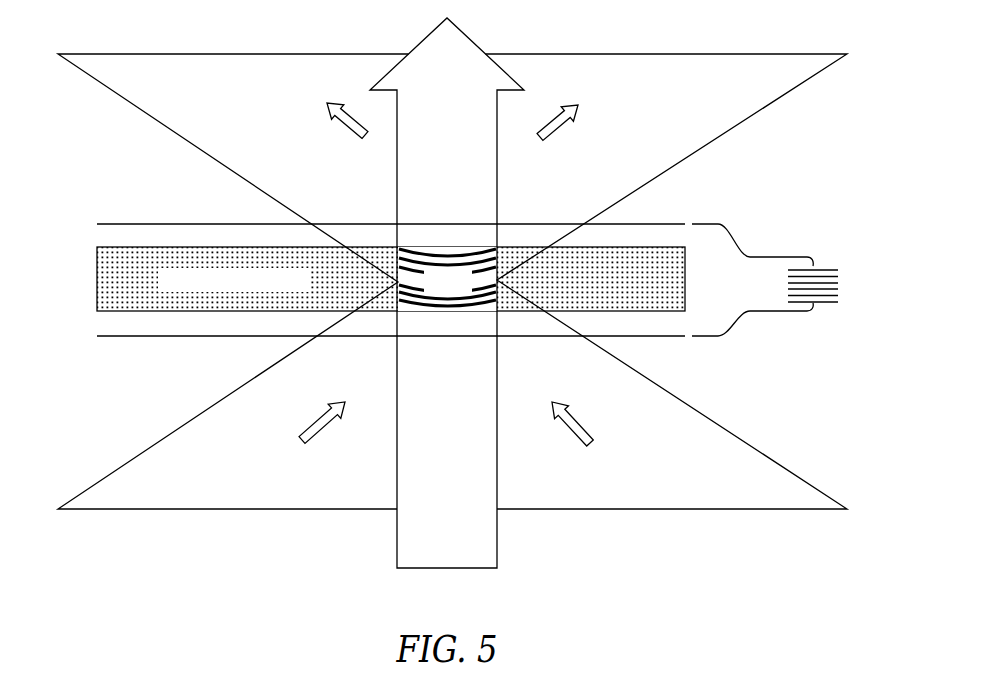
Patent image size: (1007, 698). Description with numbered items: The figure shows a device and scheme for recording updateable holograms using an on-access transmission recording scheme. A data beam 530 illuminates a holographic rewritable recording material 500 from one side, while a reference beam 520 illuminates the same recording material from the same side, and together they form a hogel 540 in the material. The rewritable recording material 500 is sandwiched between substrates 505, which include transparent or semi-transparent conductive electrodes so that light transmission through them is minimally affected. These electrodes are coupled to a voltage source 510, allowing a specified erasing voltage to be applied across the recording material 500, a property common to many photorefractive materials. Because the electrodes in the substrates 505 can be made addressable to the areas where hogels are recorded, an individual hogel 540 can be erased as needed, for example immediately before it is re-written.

The holographic rewritable recording material 500 is at (97, 281).
The substrates 505 is at (102, 237).
The voltage source 510 is at (825, 304).
The reference beam 520 is at (498, 550).
The data beam 530 is at (763, 452).
The hogel 540 is at (453, 247).